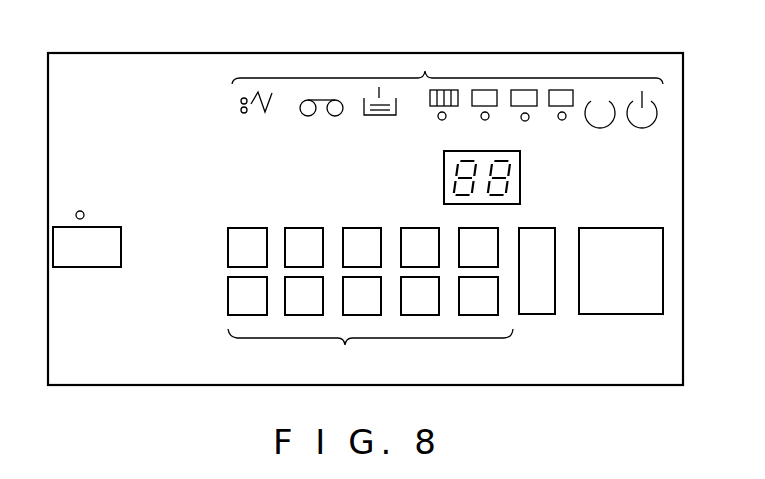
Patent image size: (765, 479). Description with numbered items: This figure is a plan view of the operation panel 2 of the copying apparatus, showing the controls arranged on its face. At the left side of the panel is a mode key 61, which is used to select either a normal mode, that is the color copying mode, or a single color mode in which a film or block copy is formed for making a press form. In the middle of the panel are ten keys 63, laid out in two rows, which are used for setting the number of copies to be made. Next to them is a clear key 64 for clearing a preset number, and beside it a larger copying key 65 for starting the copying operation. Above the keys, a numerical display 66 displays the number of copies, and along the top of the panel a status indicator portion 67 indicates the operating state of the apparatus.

The operation panel 2 is at (183, 70).
The status indicator portion 67 is at (425, 70).
The numerical display 66 is at (521, 170).
The mode key 61 is at (85, 267).
The ten keys 63 is at (345, 345).
The clear key 64 is at (540, 314).
The copying key 65 is at (625, 314).